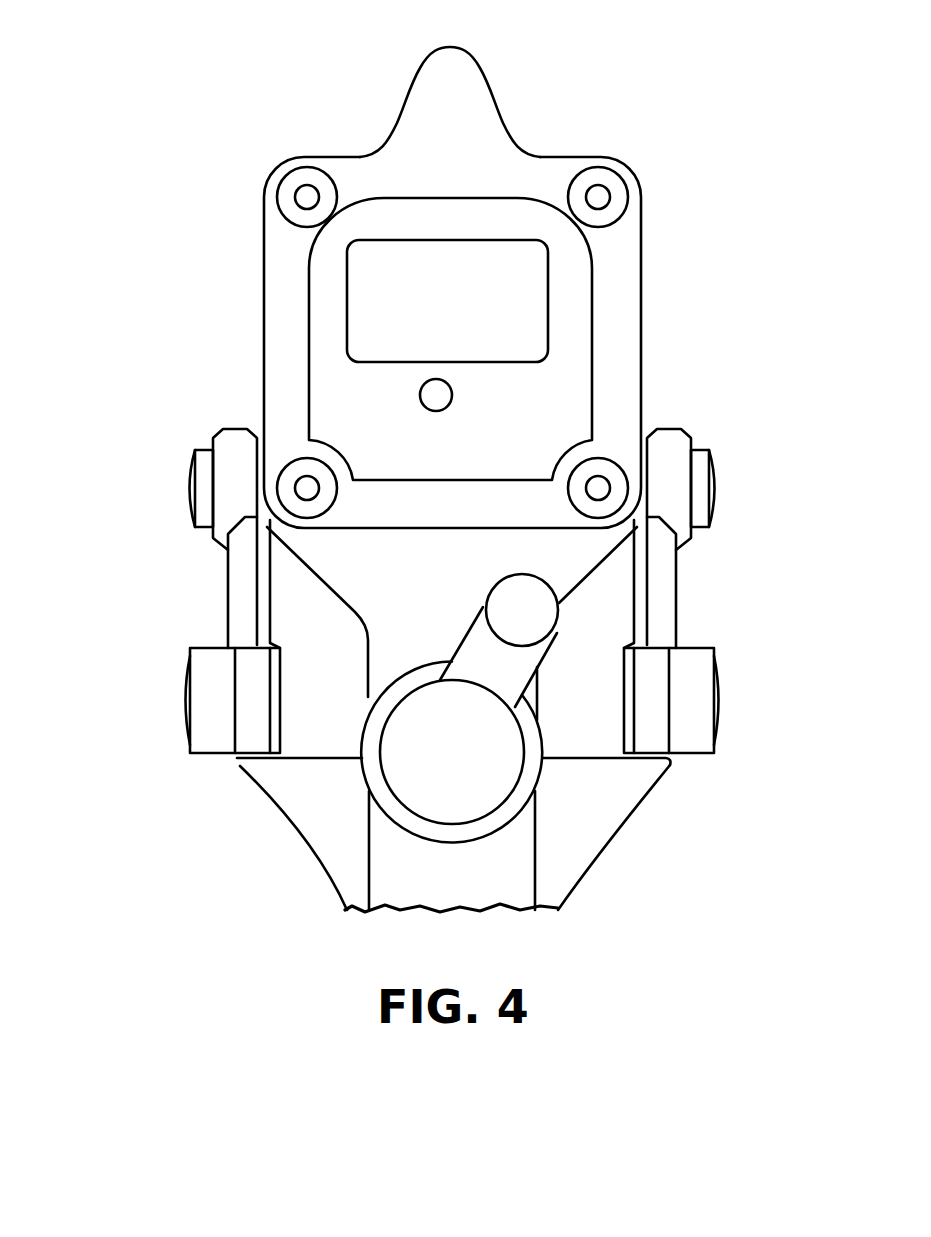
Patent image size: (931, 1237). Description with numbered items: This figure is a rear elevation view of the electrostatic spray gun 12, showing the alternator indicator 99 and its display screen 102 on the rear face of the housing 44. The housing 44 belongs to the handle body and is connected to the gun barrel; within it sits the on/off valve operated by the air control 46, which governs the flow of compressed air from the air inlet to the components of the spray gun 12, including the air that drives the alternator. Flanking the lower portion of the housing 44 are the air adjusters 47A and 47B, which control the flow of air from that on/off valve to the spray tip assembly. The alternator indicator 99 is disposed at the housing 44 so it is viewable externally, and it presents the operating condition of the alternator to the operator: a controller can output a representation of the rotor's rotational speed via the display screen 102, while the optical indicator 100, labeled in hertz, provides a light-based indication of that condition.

The spray gun 12 is at (141, 191).
The housing 44 is at (279, 348).
The alternator indicator 99 is at (620, 311).
The display screen 102 is at (517, 240).
The optical indicator 100 is at (453, 397).
The air control 46 is at (448, 798).
The air adjuster 47A is at (723, 717).
The air adjuster 47B is at (183, 709).